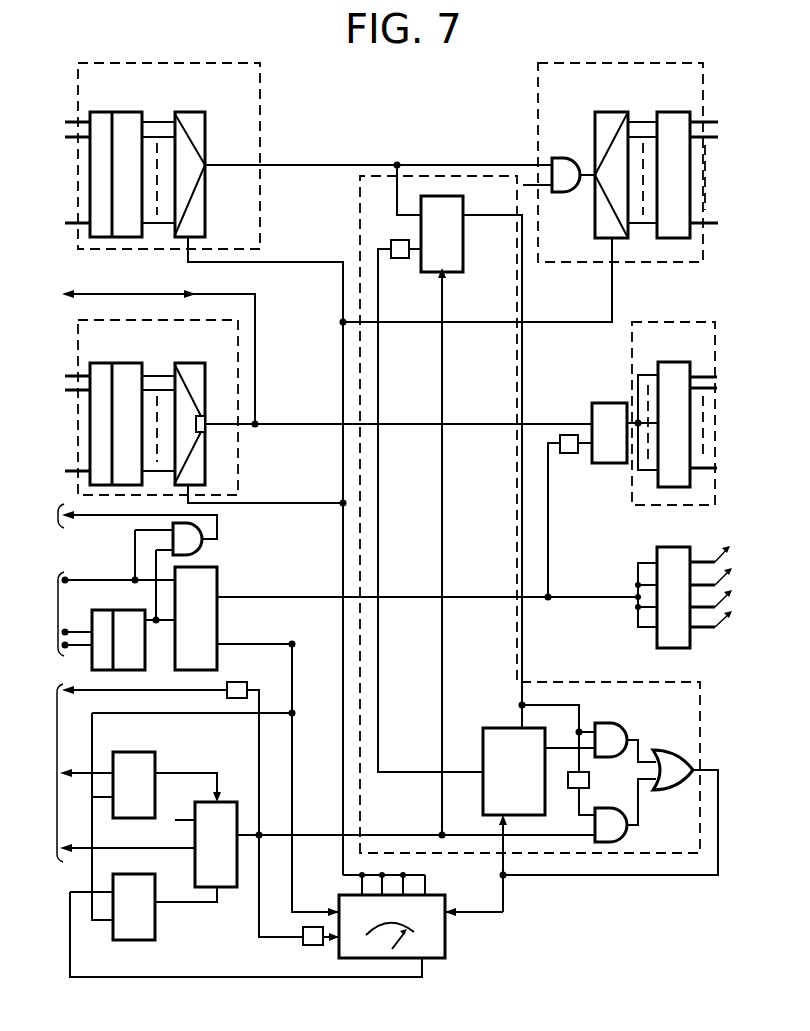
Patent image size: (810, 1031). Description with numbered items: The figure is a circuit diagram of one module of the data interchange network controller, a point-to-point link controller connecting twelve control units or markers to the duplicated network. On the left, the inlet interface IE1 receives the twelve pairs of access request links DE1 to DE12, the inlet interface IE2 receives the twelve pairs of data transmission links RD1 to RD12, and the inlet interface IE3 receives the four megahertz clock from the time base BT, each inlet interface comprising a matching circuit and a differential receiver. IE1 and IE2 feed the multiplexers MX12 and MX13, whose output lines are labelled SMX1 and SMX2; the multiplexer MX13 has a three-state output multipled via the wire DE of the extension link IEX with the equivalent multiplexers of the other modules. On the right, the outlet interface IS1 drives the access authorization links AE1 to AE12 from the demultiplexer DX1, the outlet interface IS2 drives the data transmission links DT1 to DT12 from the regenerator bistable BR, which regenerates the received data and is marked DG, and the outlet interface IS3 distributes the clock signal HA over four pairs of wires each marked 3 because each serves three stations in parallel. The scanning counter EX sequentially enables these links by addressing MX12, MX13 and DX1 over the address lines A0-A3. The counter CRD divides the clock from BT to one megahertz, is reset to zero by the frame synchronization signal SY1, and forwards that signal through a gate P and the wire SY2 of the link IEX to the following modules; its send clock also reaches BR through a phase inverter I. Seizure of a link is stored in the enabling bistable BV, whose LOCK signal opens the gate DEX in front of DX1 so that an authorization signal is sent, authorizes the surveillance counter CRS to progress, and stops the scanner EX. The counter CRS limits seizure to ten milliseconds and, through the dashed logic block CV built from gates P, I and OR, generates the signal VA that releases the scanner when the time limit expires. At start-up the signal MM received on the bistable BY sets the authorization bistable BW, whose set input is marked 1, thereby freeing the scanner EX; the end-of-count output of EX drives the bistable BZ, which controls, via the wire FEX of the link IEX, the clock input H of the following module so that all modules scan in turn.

The inlet interface IE1 is at (112, 112).
The inlet interface IE2 is at (112, 363).
The inlet interface IE3 is at (137, 608).
The multiplexer MX12 is at (189, 112).
The multiplexer MX13 is at (178, 363).
The demultiplexer DX1 is at (600, 112).
The outlet interface IS1 is at (662, 112).
The outlet interface IS2 is at (660, 362).
The outlet interface IS3 is at (660, 547).
The first multiplexer output signal SMX1 is at (259, 140).
The second multiplexer output signal SMX2 is at (238, 385).
The demultiplexer enable gate DEX is at (538, 140).
The enabling bistable BV is at (463, 262).
The LOCK signal LOCK is at (494, 460).
The regenerator bistable BR is at (602, 465).
The data gate signal DG is at (632, 372).
The counter CRD is at (217, 632).
The monitoring counter CRS is at (483, 732).
The validation circuit CV is at (608, 682).
The OR gate OR is at (674, 744).
The signal VA is at (626, 815).
The scanning counter EX is at (445, 945).
The bistable BY is at (155, 756).
The authorization bistable BW is at (228, 802).
The bistable BZ is at (140, 944).
The gate P is at (562, 192).
The phase inverter I is at (393, 258).
The addresses A0-A3 is at (400, 555).
The access request wire DE is at (160, 347).
The access request link DE1 is at (65, 114).
The access request link DE12 is at (59, 239).
The data transmission link RD1 is at (63, 368).
The data transmission link RD12 is at (58, 484).
The access authorization link AE1 is at (715, 114).
The access authorization link AE12 is at (714, 242).
The data transmission link DT1 is at (716, 367).
The data transmission link DT12 is at (716, 484).
The clock signal HA is at (726, 597).
The three-station group 3 is at (737, 569).
The multiwire extension links IEX is at (42, 572).
The frame synchronization signal SY1 is at (119, 568).
The wire SY2 is at (139, 529).
The time base BT is at (62, 639).
The wire FEX is at (182, 811).
The signal MM is at (86, 761).
The synchronizing clock H is at (127, 835).
The logic one input 1 is at (182, 820).